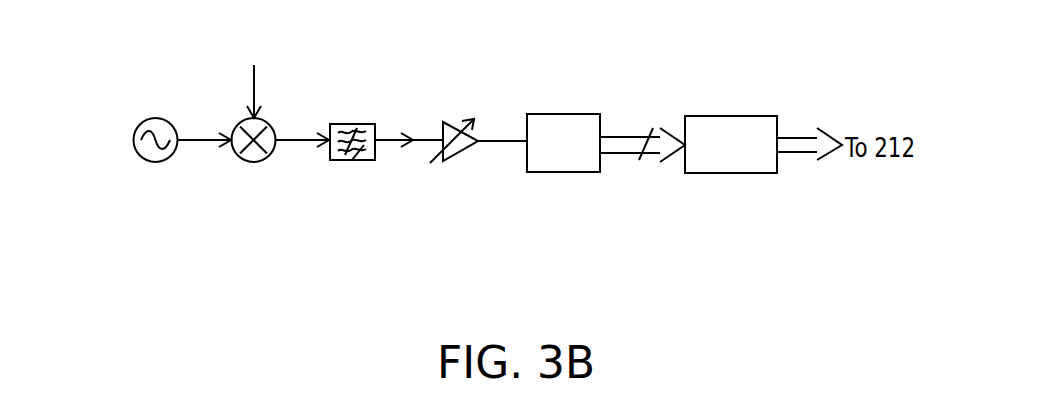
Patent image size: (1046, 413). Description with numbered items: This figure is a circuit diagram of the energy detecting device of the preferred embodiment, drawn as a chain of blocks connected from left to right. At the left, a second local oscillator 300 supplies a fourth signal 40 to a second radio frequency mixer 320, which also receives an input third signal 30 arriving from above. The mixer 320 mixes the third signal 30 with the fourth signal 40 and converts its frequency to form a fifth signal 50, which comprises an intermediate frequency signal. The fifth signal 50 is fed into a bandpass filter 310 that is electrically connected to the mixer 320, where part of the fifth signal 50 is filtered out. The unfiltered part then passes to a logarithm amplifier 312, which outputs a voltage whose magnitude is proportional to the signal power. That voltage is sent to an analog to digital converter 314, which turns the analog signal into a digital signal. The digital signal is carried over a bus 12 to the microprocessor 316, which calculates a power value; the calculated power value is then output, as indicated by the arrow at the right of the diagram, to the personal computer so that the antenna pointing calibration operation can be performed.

The second local oscillator 300 is at (157, 162).
The fourth signal 40 is at (208, 133).
The second radio frequency mixer 320 is at (255, 162).
The third signal 30 is at (254, 88).
The fifth signal 50 is at (305, 136).
The bandpass filter 310 is at (345, 160).
The logarithm amplifier 312 is at (453, 158).
The analog to digital converter 314 is at (552, 172).
The digital bus 12 is at (642, 133).
The microprocessor 316 is at (703, 173).